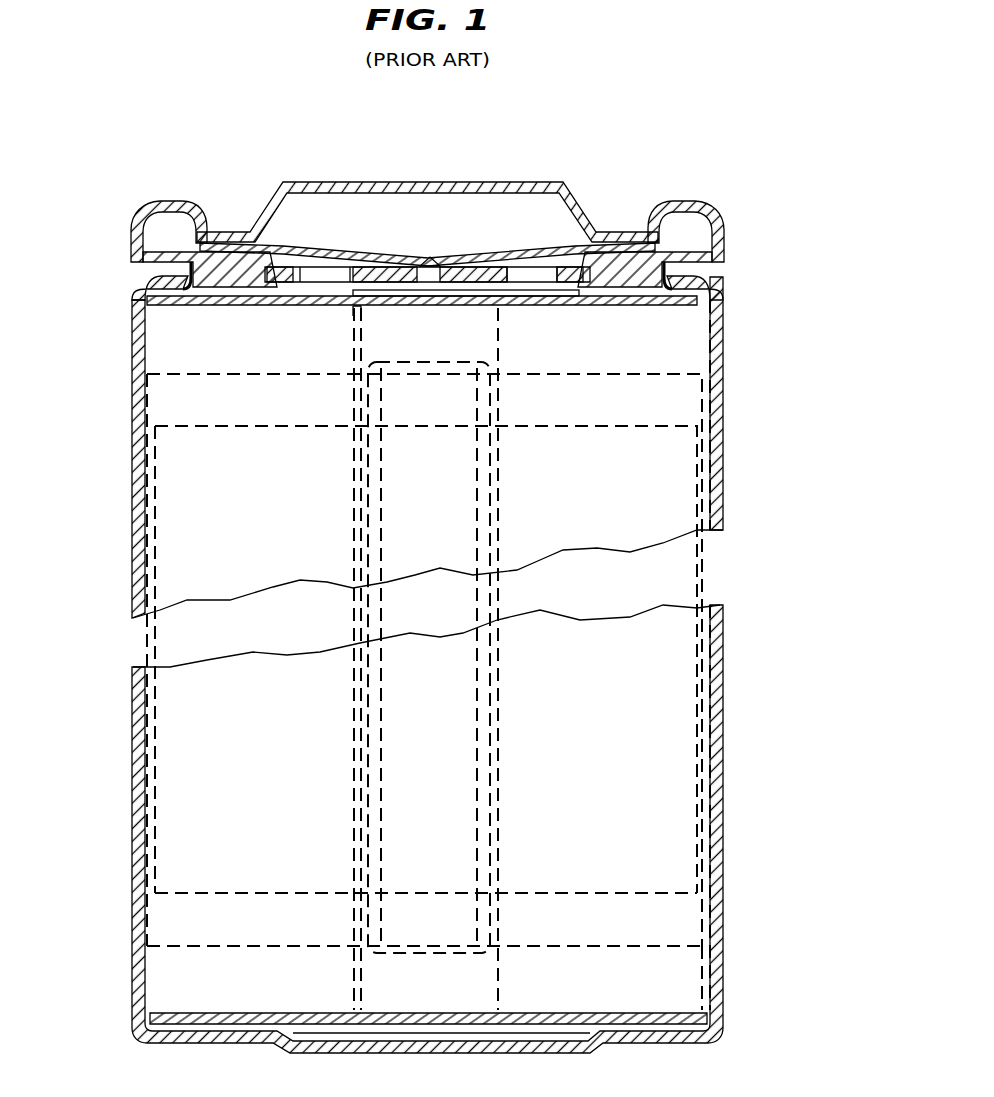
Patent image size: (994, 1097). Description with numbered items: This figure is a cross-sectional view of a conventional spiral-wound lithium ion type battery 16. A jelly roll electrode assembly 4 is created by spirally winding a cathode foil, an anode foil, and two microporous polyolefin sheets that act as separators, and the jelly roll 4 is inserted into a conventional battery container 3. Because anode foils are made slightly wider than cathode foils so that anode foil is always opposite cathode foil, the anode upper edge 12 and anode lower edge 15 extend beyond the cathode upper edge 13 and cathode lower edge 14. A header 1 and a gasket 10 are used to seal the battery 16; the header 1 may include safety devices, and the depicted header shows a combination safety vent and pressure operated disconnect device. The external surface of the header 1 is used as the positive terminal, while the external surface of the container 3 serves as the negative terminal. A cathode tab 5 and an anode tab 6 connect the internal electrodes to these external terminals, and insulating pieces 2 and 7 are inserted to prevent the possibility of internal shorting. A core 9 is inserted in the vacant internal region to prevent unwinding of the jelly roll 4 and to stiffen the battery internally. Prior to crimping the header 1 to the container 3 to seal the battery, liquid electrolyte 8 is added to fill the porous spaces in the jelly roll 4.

The header 1 is at (481, 177).
The insulating piece 2 is at (643, 303).
The battery container 3 is at (724, 357).
The jelly roll electrode assembly 4 is at (663, 473).
The cathode tab 5 is at (353, 550).
The anode tab 6 is at (697, 960).
The insulating piece 7 is at (683, 1010).
The liquid electrolyte 8 is at (663, 677).
The core 9 is at (493, 752).
The gasket 10 is at (648, 199).
The anode upper edge 12 is at (195, 373).
The cathode upper edge 13 is at (193, 427).
The cathode lower edge 14 is at (193, 893).
The anode lower edge 15 is at (190, 950).
The battery 16 is at (743, 103).